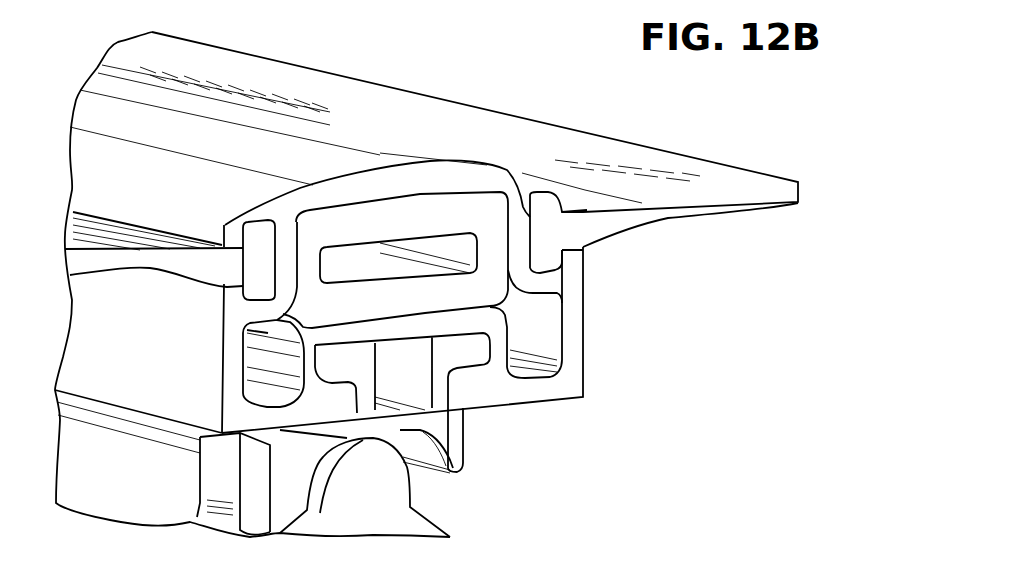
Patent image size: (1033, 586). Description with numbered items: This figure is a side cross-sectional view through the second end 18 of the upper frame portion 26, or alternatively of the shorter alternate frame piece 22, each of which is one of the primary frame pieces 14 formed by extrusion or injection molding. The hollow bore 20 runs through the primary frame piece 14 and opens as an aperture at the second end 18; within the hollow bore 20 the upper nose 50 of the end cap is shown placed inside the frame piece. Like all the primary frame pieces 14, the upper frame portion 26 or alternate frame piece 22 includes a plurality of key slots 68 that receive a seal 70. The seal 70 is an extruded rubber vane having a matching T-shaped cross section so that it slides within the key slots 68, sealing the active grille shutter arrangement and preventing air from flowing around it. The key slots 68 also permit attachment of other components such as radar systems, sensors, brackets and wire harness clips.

The primary frame piece 14 is at (423, 304).
The second end 18 is at (590, 395).
The hollow bore 20 is at (243, 330).
The alternate frame piece 22 is at (426, 284).
The upper frame portion 26 is at (318, 148).
The upper nose 50 is at (442, 207).
The key slot 68 is at (278, 238).
The seal 70 is at (767, 174).